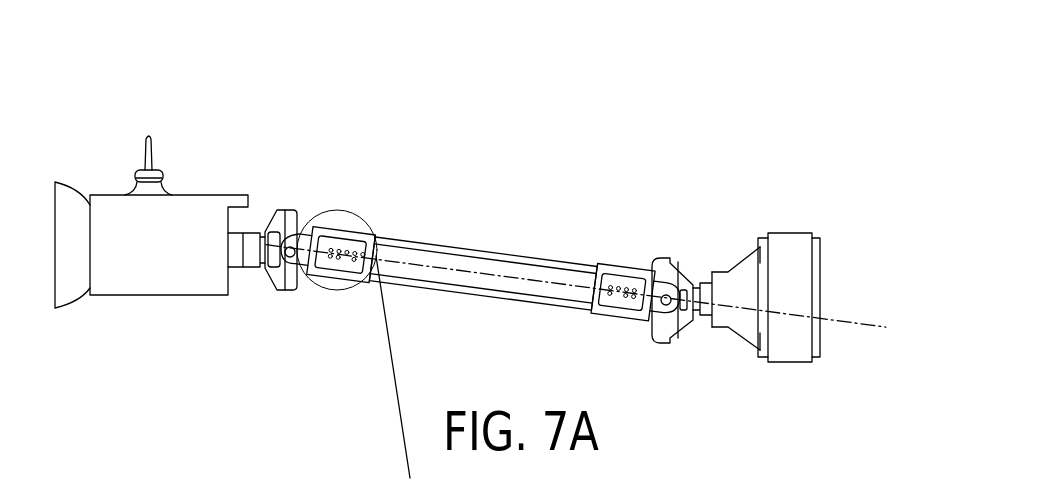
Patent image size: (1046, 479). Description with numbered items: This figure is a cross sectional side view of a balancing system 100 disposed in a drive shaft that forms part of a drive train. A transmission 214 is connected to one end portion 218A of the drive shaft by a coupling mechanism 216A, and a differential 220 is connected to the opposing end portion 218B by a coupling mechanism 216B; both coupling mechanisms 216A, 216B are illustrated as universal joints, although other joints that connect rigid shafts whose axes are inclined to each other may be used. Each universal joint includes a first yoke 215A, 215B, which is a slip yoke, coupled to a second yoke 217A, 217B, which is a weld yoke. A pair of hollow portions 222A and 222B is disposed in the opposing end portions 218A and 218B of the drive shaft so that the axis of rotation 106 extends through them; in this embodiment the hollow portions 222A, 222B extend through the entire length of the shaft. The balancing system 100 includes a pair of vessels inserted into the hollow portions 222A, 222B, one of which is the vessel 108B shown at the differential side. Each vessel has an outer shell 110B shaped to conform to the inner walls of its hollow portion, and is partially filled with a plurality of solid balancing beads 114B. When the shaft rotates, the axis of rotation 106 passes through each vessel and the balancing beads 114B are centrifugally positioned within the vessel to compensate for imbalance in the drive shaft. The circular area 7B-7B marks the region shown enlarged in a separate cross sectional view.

The transmission 214 is at (202, 195).
The first yoke (slip yoke) 215A is at (270, 216).
The coupling mechanism (universal joint) 216A is at (273, 283).
The second yoke (weld yoke) 217A is at (295, 232).
The end portion of the drive shaft 218A is at (285, 200).
The circular area 7B-7B is at (337, 290).
The hollow portion 222A is at (380, 258).
The hollow portion 222B is at (566, 293).
The axis of rotation 106 is at (867, 330).
The opposing end portion of the drive shaft 218B is at (568, 208).
The balancing system 100 is at (597, 276).
The vessel 108B is at (623, 265).
The outer shell 110B is at (617, 309).
The solid balancing beads 114B is at (622, 300).
The second yoke (weld yoke) 217B is at (652, 321).
The first yoke (slip yoke) 215B is at (691, 255).
The coupling mechanism (universal joint) 216B is at (687, 328).
The differential 220 is at (793, 360).